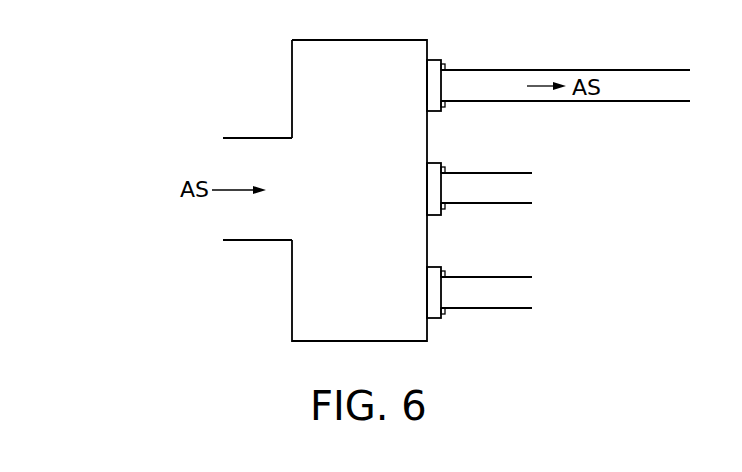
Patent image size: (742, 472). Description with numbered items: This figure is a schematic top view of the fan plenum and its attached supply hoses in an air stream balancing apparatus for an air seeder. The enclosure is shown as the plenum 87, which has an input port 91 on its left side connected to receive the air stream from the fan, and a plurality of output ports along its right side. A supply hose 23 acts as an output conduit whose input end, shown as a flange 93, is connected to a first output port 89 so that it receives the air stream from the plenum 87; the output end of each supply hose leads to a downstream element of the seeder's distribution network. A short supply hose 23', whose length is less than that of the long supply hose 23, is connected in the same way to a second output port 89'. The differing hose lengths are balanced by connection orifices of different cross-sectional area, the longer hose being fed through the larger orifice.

The plenum 87 is at (353, 341).
The input port 91 is at (253, 241).
The flange 93 is at (441, 60).
The output port 89 is at (395, 89).
The second output port 89' is at (402, 292).
The supply hose 23 is at (565, 71).
The short supply hose 23' is at (507, 306).